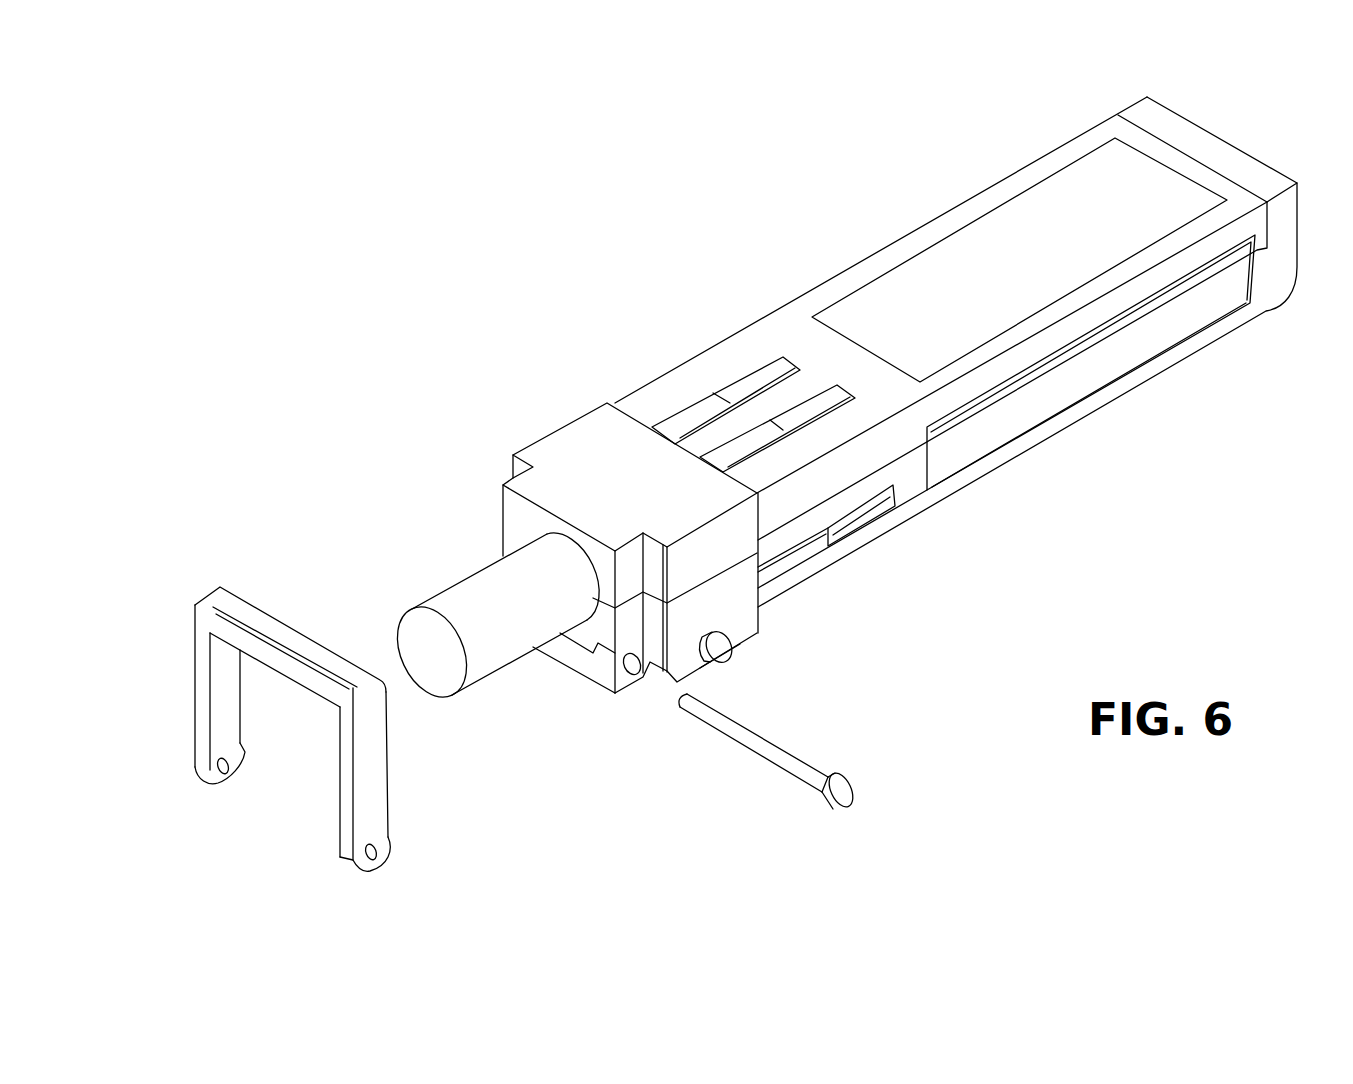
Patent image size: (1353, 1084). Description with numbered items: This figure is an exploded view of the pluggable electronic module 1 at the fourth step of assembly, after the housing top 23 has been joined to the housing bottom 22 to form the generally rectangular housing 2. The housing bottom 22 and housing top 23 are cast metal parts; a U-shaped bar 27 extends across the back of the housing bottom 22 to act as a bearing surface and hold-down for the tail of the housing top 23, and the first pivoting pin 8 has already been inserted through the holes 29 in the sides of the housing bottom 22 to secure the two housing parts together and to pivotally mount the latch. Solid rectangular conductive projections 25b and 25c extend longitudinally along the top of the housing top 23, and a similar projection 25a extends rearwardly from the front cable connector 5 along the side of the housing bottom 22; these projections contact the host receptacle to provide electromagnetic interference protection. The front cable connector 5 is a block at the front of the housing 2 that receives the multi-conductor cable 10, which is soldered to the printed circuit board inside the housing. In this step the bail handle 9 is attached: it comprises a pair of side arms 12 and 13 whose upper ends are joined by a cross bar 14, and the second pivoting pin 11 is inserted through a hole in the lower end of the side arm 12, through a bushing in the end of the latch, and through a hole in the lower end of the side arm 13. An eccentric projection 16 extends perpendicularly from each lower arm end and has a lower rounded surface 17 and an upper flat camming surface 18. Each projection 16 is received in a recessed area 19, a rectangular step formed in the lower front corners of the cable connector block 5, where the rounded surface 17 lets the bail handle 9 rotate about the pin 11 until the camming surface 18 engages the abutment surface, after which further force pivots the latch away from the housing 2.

The pluggable electronic module 1 is at (628, 180).
The housing 2 is at (921, 363).
The front cable connector 5 is at (642, 559).
The first pivoting pin 8 is at (725, 650).
The bail handle 9 is at (290, 709).
The multi-conductor cable 10 is at (452, 578).
The second pivoting pin 11 is at (798, 757).
The side arm 12 is at (372, 760).
The side arm 13 is at (195, 684).
The cross bar 14 is at (268, 607).
The eccentric projection 16 is at (178, 795).
The lower rounded surface 17 is at (240, 765).
The upper flat camming surface 18 is at (240, 747).
The recessed area 19 is at (655, 672).
The housing bottom 22 is at (1163, 340).
The housing top 23 is at (957, 267).
The conductive projection 25a is at (850, 527).
The conductive projection 25b is at (828, 398).
The conductive projection 25c is at (683, 410).
The U-shaped bar 27 is at (1200, 143).
The holes 29 is at (713, 618).